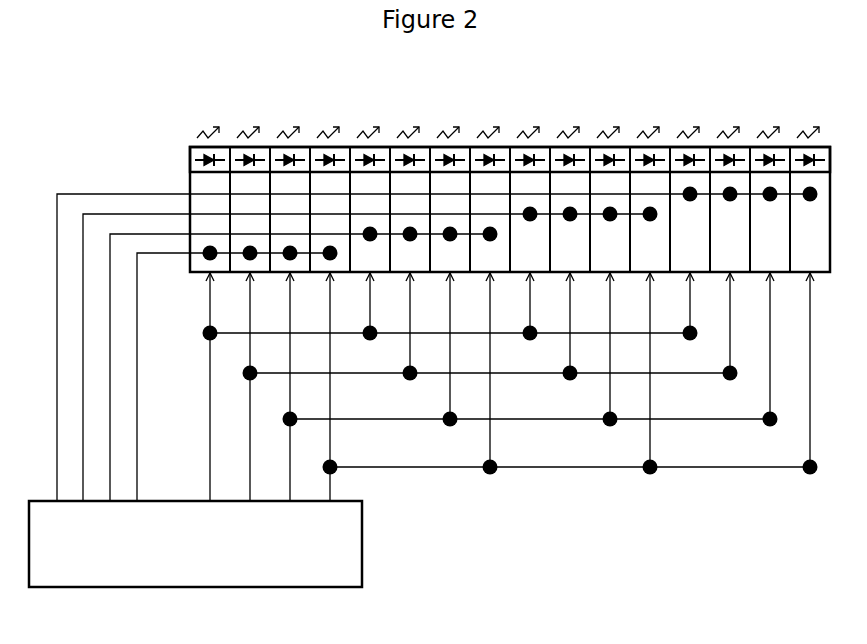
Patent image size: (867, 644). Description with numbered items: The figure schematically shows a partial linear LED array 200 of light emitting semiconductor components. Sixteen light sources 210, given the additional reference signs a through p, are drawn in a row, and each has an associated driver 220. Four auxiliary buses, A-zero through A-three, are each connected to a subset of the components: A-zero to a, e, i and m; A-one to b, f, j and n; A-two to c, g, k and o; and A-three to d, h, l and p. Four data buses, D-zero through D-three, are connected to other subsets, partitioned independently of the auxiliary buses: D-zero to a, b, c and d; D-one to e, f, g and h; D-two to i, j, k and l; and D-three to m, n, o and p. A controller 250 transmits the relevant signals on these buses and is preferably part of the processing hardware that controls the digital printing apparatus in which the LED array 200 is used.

The LED display array 200 is at (443, 282).
The light source 210 is at (190, 163).
The driver 220 is at (195, 274).
The controller 250 is at (362, 537).